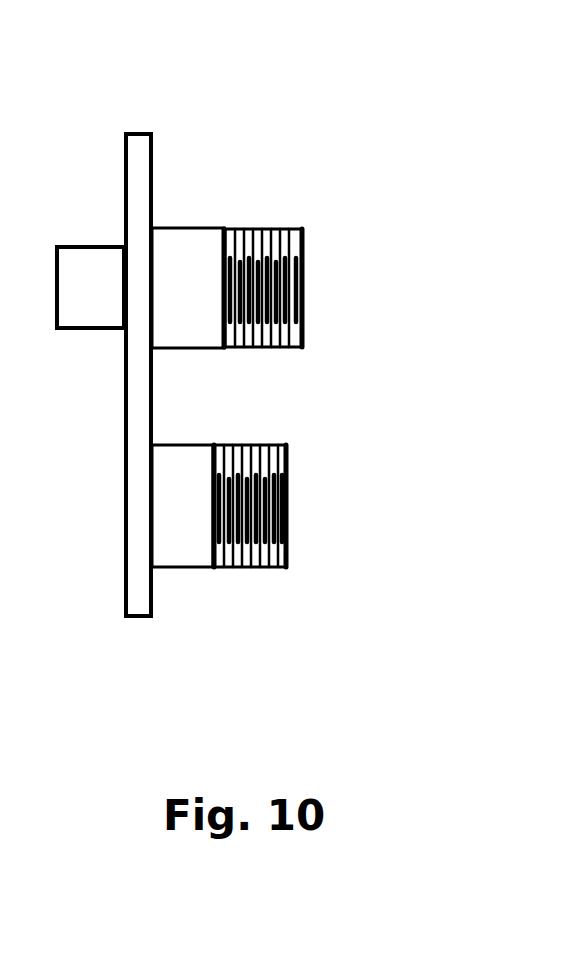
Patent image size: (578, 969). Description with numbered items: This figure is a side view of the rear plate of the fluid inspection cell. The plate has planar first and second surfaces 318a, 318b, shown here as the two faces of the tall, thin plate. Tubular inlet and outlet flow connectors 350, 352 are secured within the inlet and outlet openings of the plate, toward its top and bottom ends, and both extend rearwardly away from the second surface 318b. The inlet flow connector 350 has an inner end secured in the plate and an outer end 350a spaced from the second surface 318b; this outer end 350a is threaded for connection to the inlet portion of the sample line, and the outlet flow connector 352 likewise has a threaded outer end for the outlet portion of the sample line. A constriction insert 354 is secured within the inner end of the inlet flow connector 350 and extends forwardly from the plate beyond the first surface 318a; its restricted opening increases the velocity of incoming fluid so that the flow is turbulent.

The first surface 318a is at (124, 158).
The second surface 318b is at (153, 179).
The constriction insert 354 is at (85, 287).
The inlet flow connector 350 is at (187, 260).
The outer end of inlet flow connector 350a is at (303, 248).
The outlet flow connector 352 is at (187, 478).